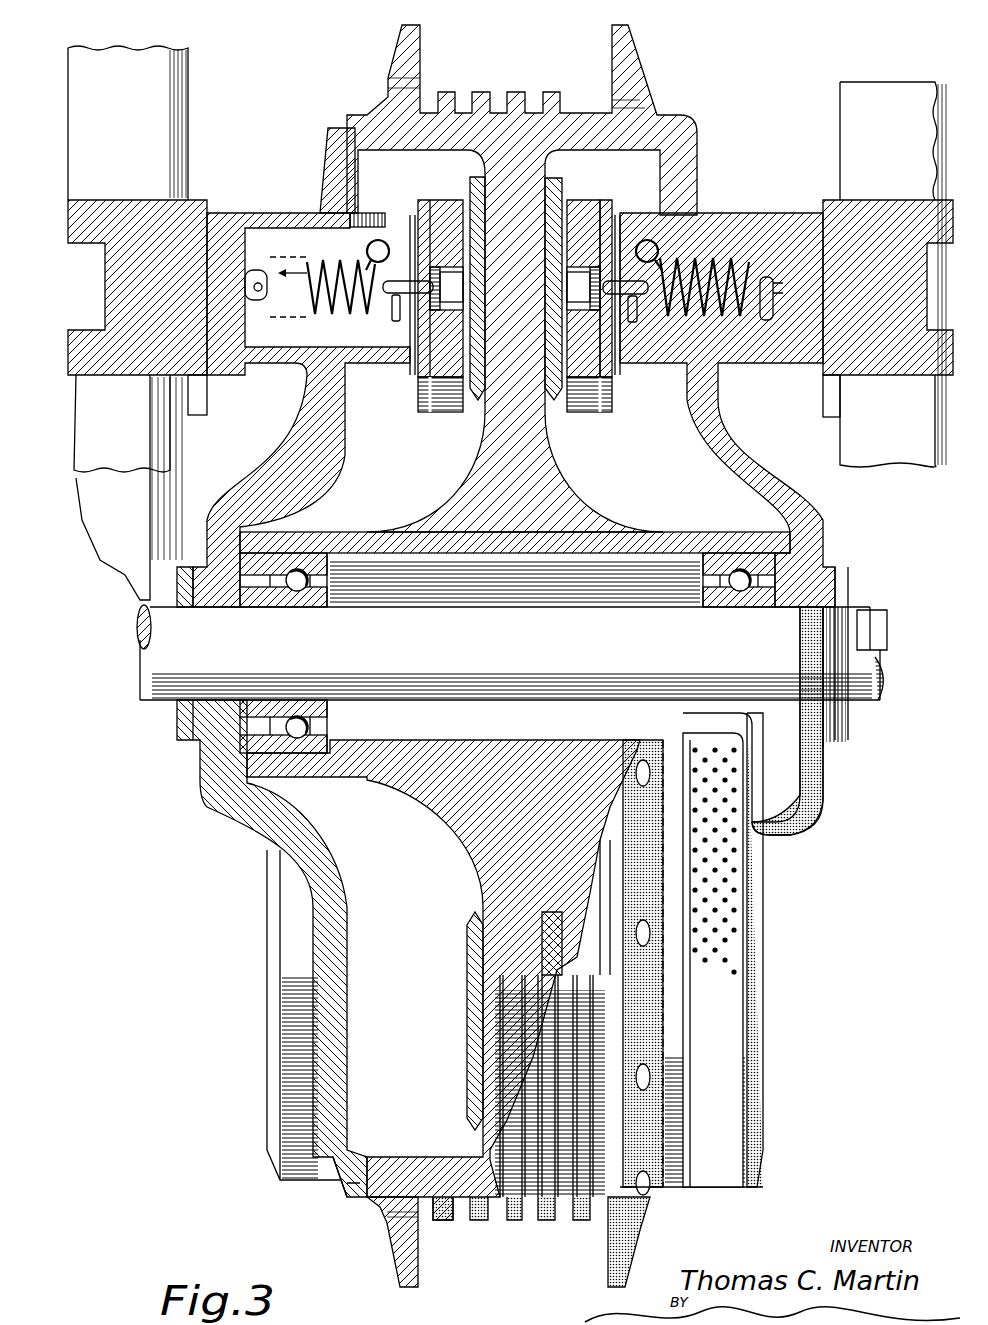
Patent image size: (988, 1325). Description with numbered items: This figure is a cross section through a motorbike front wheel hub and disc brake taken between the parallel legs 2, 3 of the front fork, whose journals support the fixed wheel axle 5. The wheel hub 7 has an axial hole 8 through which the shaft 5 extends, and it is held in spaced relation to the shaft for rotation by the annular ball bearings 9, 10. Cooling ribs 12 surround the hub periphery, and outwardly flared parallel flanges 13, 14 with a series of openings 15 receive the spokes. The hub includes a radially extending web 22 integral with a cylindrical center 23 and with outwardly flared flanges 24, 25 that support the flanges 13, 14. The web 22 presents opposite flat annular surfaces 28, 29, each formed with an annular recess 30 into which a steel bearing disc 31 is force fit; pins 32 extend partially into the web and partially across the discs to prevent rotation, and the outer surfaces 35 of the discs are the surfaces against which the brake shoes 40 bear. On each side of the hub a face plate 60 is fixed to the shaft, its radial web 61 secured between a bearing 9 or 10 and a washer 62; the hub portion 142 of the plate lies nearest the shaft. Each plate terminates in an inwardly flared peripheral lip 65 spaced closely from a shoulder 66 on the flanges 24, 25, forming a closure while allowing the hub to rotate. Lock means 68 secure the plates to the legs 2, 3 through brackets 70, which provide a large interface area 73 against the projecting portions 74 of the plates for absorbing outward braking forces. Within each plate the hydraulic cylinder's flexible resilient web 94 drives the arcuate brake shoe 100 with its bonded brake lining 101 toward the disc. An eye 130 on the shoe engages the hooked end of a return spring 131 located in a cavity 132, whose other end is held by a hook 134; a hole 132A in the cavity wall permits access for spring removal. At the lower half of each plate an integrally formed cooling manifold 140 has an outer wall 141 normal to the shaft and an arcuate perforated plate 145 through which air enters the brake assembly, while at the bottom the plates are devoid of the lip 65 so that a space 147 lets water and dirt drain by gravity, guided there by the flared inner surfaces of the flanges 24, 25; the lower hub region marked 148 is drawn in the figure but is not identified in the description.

The fork leg 2 is at (880, 115).
The fork leg 3 is at (165, 81).
The wheel axle 5 is at (447, 630).
The wheel hub 7 is at (541, 62).
The axial hole 8 is at (497, 585).
The annular ball bearing 9 is at (307, 573).
The annular ball bearing 10 is at (721, 553).
The cooling ribs 12 is at (480, 88).
The annular flange 13 is at (421, 54).
The annular flange 14 is at (610, 78).
The openings 15 is at (405, 88).
The web 22 is at (513, 160).
The cylindrical center 23 is at (613, 540).
The flange 24 is at (430, 133).
The flange 25 is at (654, 110).
The flat annular surface 28 is at (483, 434).
The flat annular surface 29 is at (550, 418).
The annular recess 30 is at (492, 208).
The steel bearing disc 31 is at (477, 348).
The pins 32 is at (467, 920).
The outer surface 35 is at (467, 222).
The brake shoe 40 is at (406, 385).
The face plate 60 is at (195, 815).
The web 61 is at (310, 453).
The washer 62 is at (180, 720).
The peripheral lip 65 is at (335, 143).
The shoulder 66 is at (590, 138).
The lock means 68 is at (143, 178).
The bracket 70 is at (207, 388).
The interface area 73 is at (192, 293).
The projecting portion 74 is at (227, 236).
The flexible resilient web 94 is at (618, 242).
The brake shoe 100 is at (604, 208).
The brake lining 101 is at (590, 210).
The eye 130 is at (638, 298).
The spring 131 is at (766, 275).
The cavity 132 is at (705, 243).
The hole 132A is at (385, 215).
The hook 134 is at (771, 275).
The cooling manifold 140 is at (293, 950).
The outer wall 141 is at (755, 993).
The hub portion 142 is at (827, 532).
The perforated plate 145 is at (737, 877).
The space 147 is at (337, 1197).
The flange 148 is at (425, 1148).